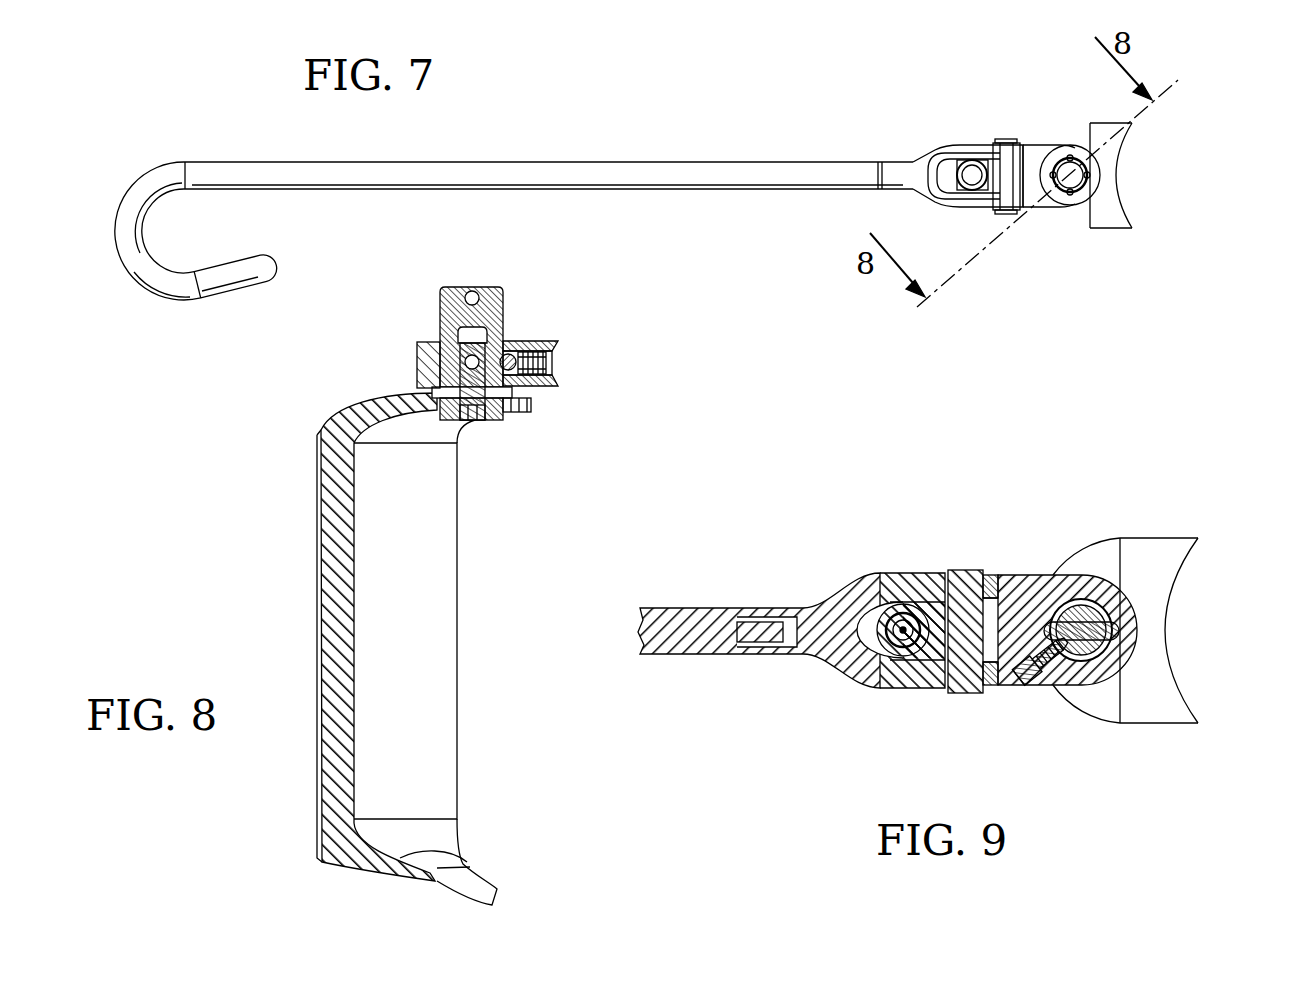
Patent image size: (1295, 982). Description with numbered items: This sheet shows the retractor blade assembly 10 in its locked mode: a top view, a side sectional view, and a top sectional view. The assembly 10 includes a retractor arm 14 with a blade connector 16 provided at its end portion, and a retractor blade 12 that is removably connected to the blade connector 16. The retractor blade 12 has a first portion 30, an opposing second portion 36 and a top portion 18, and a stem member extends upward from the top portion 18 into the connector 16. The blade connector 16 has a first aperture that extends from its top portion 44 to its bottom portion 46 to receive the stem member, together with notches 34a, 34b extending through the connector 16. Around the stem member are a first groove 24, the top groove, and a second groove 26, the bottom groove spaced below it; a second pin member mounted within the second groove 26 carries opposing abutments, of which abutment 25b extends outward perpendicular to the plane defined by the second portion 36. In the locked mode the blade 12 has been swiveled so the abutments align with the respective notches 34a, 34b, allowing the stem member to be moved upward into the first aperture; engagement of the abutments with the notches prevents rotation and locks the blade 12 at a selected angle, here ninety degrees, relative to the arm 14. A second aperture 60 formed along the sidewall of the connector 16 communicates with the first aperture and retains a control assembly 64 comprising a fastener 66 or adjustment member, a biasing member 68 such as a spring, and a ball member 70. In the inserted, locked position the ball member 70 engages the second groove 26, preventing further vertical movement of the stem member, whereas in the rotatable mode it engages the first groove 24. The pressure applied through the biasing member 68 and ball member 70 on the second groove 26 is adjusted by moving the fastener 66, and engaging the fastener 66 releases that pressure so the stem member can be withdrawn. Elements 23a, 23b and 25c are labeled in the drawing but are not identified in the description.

In FIG. 7, the retractor blade assembly 10 is at (772, 110).
In FIG. 9, the retractor blade assembly 10 is at (845, 535).
In FIG. 7, the retractor blade 12 is at (1125, 228).
In FIG. 9, the retractor blade 12 is at (1197, 723).
In FIG. 7, the retractor arm 14 is at (514, 231).
In FIG. 9, the retractor arm 14 is at (667, 605).
In FIG. 7, the blade connector 16 is at (1050, 203).
In FIG. 8, the blade connector 16 is at (417, 353).
In FIG. 9, the blade connector 16 is at (1045, 577).
In FIG. 7, the top portion 18 is at (1070, 175).
In FIG. 9, the top portion 18 is at (1100, 553).
In FIG. 7, the first protrusion 23a is at (1070, 195).
In FIG. 7, the second protrusion 23b is at (1066, 155).
In FIG. 8, the first groove 24 is at (443, 327).
In FIG. 9, the abutment 25b is at (1025, 577).
In FIG. 9, the slot 25c is at (1118, 630).
In FIG. 8, the second groove 26 is at (440, 367).
In FIG. 7, the first portion 30 is at (1118, 170).
In FIG. 8, the first portion 30 is at (317, 548).
In FIG. 9, the first portion 30 is at (1170, 588).
In FIG. 7, the notch 34a is at (1090, 178).
In FIG. 7, the notch 34b is at (1051, 173).
In FIG. 8, the second portion 36 is at (418, 555).
In FIG. 8, the top portion 44 is at (420, 342).
In FIG. 8, the bottom portion 46 is at (432, 395).
In FIG. 8, the second aperture 60 is at (553, 370).
In FIG. 9, the second aperture 60 is at (1010, 687).
In FIG. 8, the control assembly 64 is at (533, 387).
In FIG. 8, the fastener 66 is at (547, 357).
In FIG. 9, the fastener 66 is at (1023, 682).
In FIG. 8, the biasing member 68 is at (520, 351).
In FIG. 9, the biasing member 68 is at (1052, 682).
In FIG. 8, the ball member 70 is at (511, 353).
In FIG. 9, the ball member 70 is at (1070, 682).